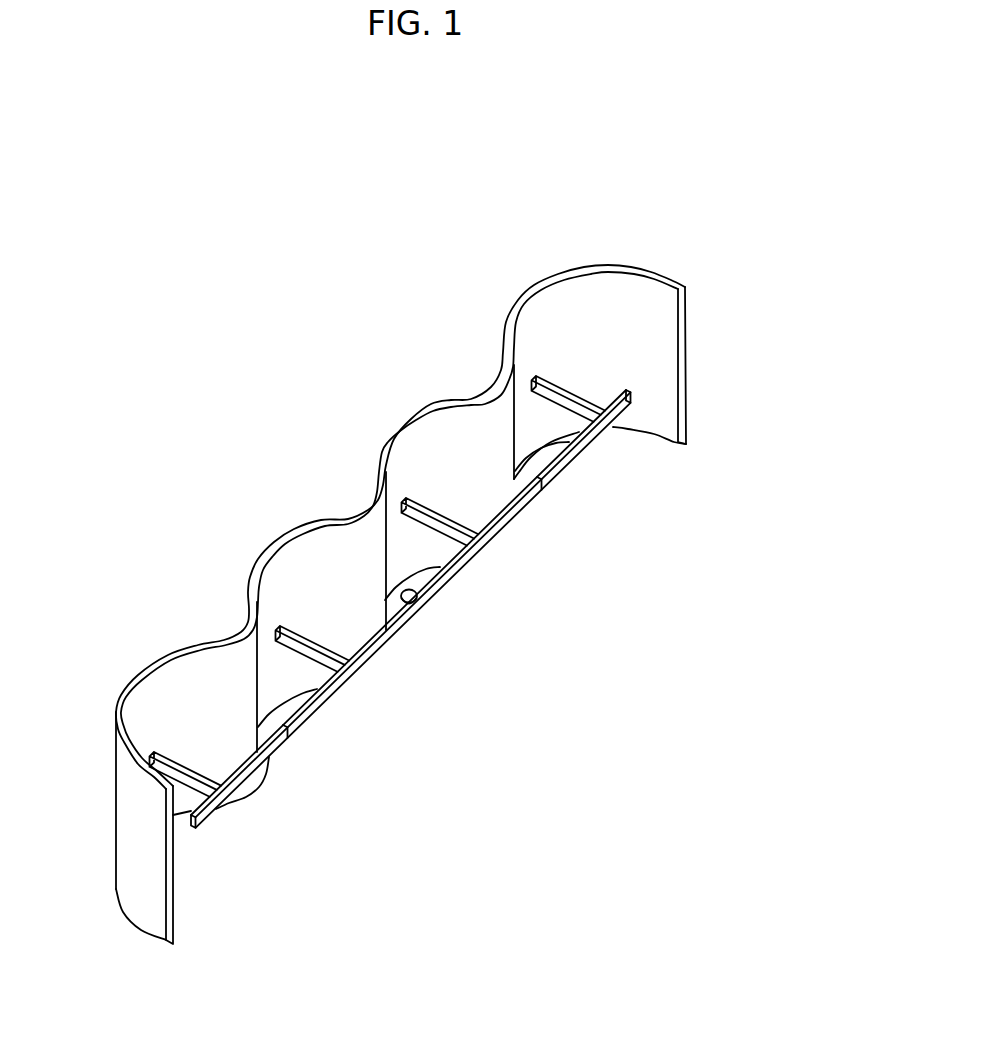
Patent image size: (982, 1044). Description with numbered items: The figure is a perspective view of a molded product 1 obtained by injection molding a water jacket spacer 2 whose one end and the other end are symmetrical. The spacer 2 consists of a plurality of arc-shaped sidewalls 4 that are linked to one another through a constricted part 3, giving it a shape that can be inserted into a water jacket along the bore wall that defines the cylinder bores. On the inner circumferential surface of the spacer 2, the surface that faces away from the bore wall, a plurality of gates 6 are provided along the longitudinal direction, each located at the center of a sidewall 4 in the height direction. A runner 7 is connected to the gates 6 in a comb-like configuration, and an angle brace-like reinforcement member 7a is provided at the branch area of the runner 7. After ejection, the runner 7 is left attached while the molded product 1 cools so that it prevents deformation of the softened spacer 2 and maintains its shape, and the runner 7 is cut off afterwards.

The molded product 1 is at (650, 195).
The spacer 2 is at (410, 472).
The constricted part 3 is at (253, 685).
The arc-shaped sidewall 4 is at (335, 562).
The gate 6 is at (420, 495).
The runner 7 is at (311, 692).
The reinforcement member 7a is at (345, 652).